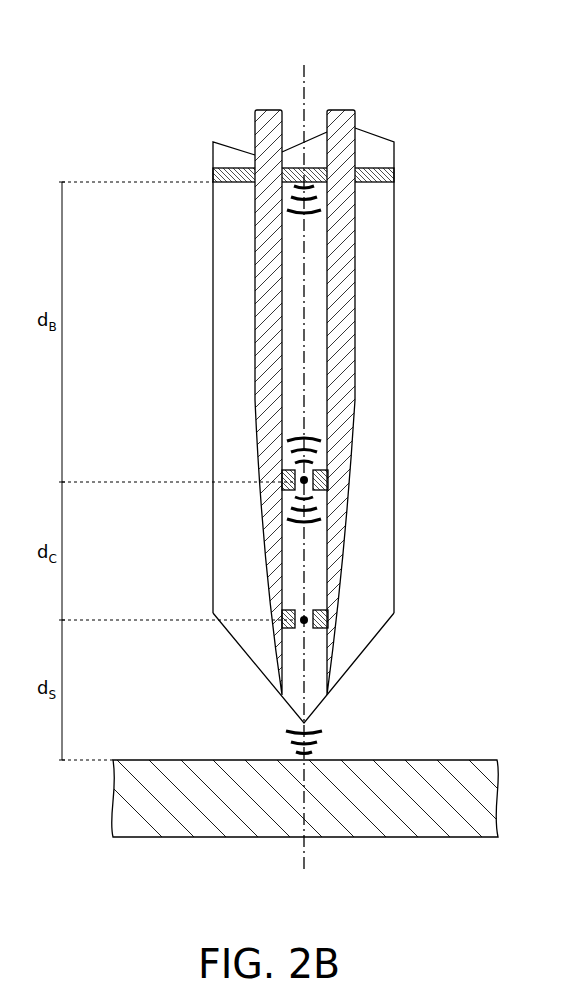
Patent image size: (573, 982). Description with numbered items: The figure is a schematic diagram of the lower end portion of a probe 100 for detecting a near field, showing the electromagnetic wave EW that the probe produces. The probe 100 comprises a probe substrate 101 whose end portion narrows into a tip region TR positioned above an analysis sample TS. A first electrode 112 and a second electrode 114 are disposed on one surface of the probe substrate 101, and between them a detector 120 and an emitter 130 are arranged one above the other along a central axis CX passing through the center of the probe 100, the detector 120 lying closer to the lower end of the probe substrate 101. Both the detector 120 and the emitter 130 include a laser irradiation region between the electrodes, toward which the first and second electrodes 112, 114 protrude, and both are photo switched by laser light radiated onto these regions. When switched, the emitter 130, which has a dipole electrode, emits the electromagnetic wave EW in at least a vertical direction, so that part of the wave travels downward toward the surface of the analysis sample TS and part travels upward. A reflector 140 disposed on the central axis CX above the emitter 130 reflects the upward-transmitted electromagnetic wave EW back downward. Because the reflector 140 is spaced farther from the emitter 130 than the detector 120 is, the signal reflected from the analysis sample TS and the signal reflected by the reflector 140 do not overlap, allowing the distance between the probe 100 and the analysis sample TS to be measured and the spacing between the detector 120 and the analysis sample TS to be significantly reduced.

The probe 100 is at (189, 36).
The probe substrate 101 is at (213, 526).
The first electrode 112 is at (272, 108).
The second electrode 114 is at (337, 110).
The detector 120 is at (338, 578).
The emitter 130 is at (352, 436).
The reflector 140 is at (398, 172).
The central axis CX is at (307, 95).
The electromagnetic wave EW is at (314, 427).
The tip region TR is at (240, 661).
The analysis sample TS is at (440, 760).